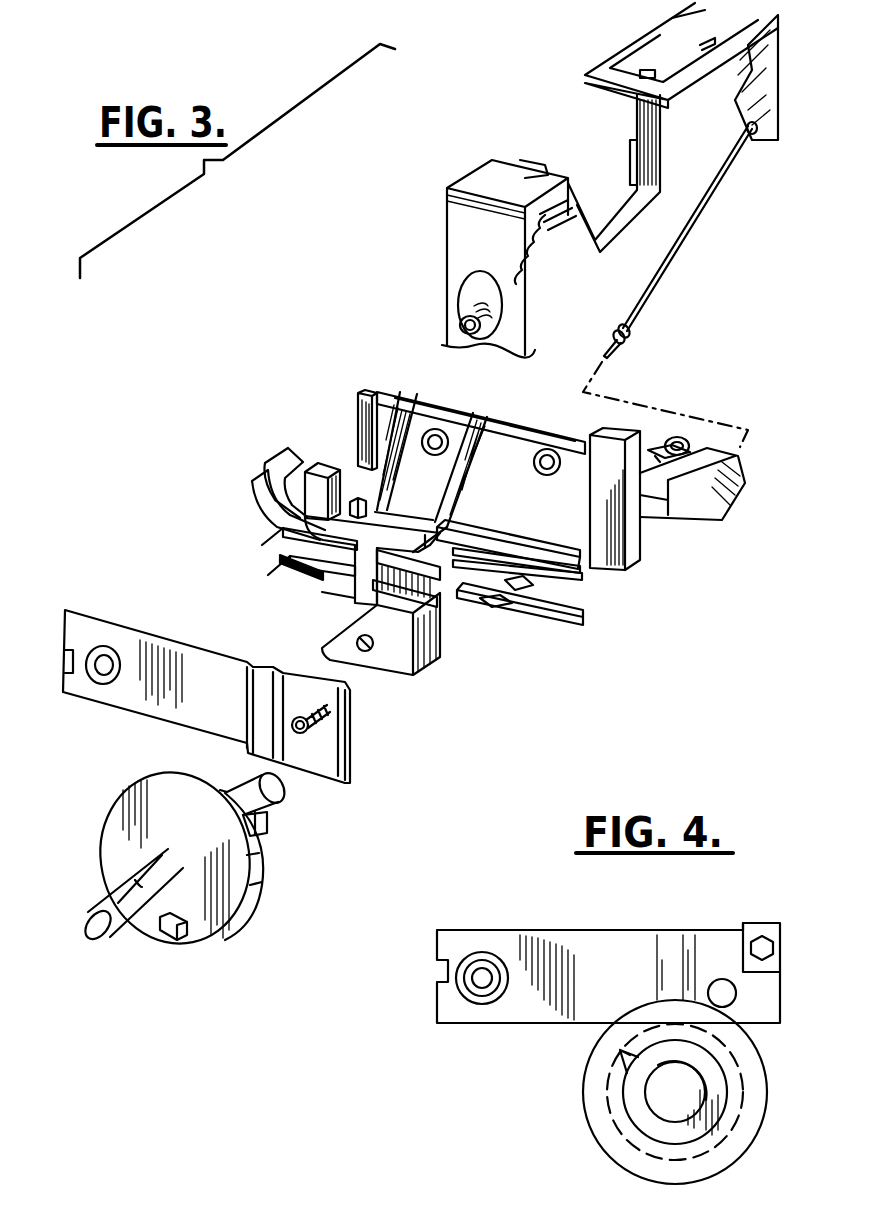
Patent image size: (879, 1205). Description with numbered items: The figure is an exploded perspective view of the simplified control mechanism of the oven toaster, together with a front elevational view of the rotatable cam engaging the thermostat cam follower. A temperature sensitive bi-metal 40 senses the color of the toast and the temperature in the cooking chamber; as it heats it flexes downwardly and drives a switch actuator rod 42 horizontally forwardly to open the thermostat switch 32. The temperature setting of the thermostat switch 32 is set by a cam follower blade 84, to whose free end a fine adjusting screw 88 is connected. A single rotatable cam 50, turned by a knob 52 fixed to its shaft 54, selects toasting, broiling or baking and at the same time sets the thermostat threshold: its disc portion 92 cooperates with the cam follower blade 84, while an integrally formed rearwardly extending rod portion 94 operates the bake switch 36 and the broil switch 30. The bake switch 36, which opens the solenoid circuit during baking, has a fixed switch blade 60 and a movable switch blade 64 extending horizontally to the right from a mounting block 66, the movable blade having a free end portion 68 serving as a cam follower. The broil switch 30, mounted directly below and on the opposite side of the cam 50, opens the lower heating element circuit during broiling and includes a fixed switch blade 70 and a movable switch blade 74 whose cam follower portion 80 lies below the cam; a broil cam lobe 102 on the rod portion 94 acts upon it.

In FIG. 3, the broil switch 30 is at (476, 625).
In FIG. 3, the thermostat switch 32 is at (694, 430).
In FIG. 3, the bake switch 36 is at (560, 528).
In FIG. 3, the temperature sensitive bi-metal 40 is at (623, 48).
In FIG. 3, the switch actuator rod 42 is at (700, 220).
In FIG. 3, the rotatable cam 50 is at (223, 940).
In FIG. 4, the rotatable cam 50 is at (755, 1138).
In FIG. 4, the knob 52 is at (655, 1102).
In FIG. 3, the shaft 54 is at (127, 928).
In FIG. 3, the fixed switch blade 60 is at (580, 572).
In FIG. 3, the movable switch blade 64 is at (478, 540).
In FIG. 3, the mounting block 66 is at (322, 617).
In FIG. 3, the free end portion 68 is at (573, 565).
In FIG. 3, the fixed switch blade 70 is at (520, 598).
In FIG. 3, the movable switch blade 74 is at (485, 607).
In FIG. 3, the cam follower portion 80 is at (580, 618).
In FIG. 3, the cam follower blade 84 is at (515, 430).
In FIG. 4, the cam follower blade 84 is at (620, 940).
In FIG. 3, the fine adjusting screw 88 is at (312, 737).
In FIG. 4, the fine adjusting screw 88 is at (762, 940).
In FIG. 3, the disc portion 92 is at (260, 898).
In FIG. 3, the rod portion 94 is at (278, 793).
In FIG. 3, the broil cam lobe 102 is at (262, 828).